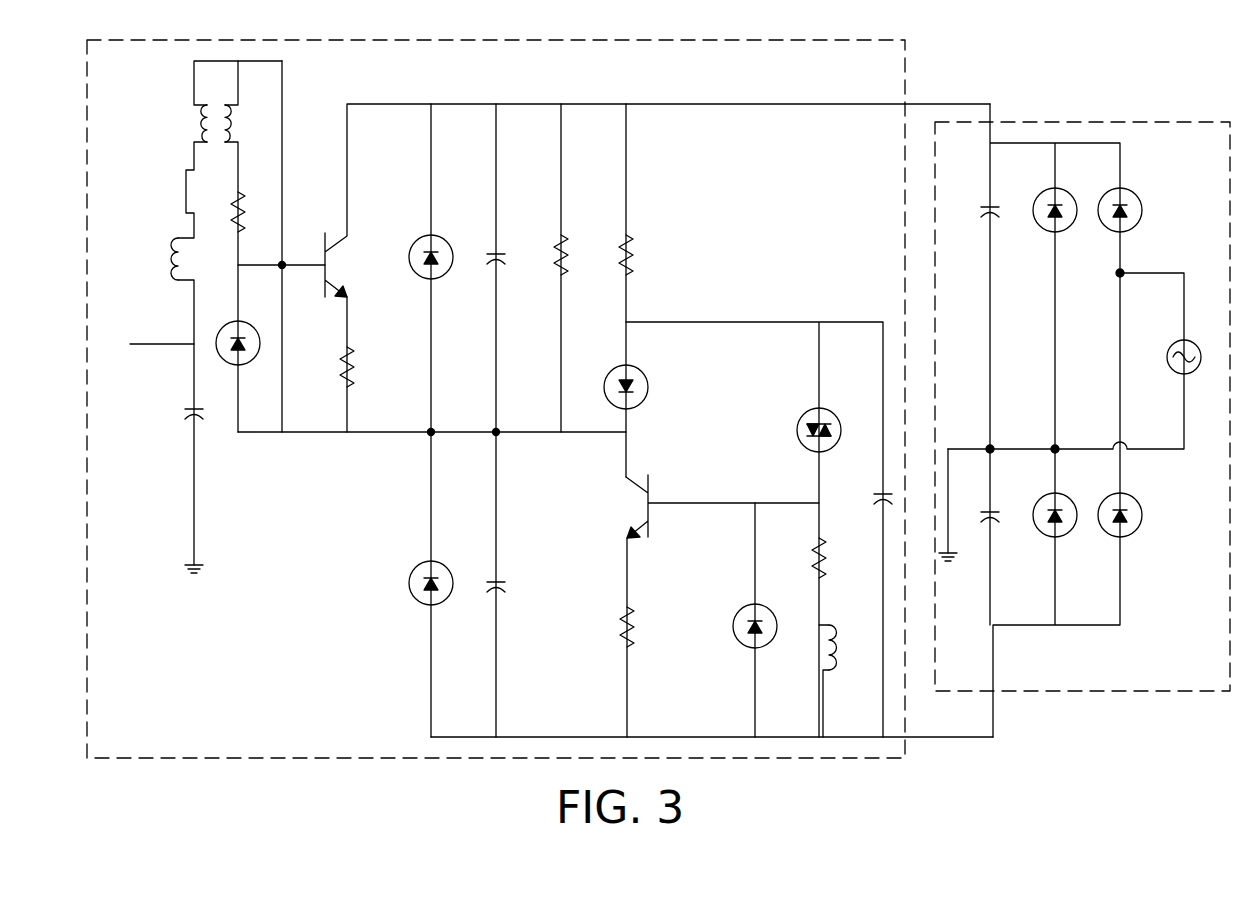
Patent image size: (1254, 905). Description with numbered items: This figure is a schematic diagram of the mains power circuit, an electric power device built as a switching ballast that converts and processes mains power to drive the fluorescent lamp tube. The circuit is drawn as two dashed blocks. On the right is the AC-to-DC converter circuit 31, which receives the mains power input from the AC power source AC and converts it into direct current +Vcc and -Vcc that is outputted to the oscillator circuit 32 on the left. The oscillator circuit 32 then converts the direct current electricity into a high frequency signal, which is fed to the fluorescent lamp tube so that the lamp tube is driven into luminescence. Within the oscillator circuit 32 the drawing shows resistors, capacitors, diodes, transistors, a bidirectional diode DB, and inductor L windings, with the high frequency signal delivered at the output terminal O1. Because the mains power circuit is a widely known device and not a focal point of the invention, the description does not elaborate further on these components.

The AC-to-DC converter circuit 31 is at (1052, 100).
The oscillator circuit 32 is at (528, 30).
The output terminal O1 is at (148, 343).
The inductor L is at (160, 259).
The bidirectional diode (diac) DB is at (801, 430).
The AC power source AC is at (1165, 357).